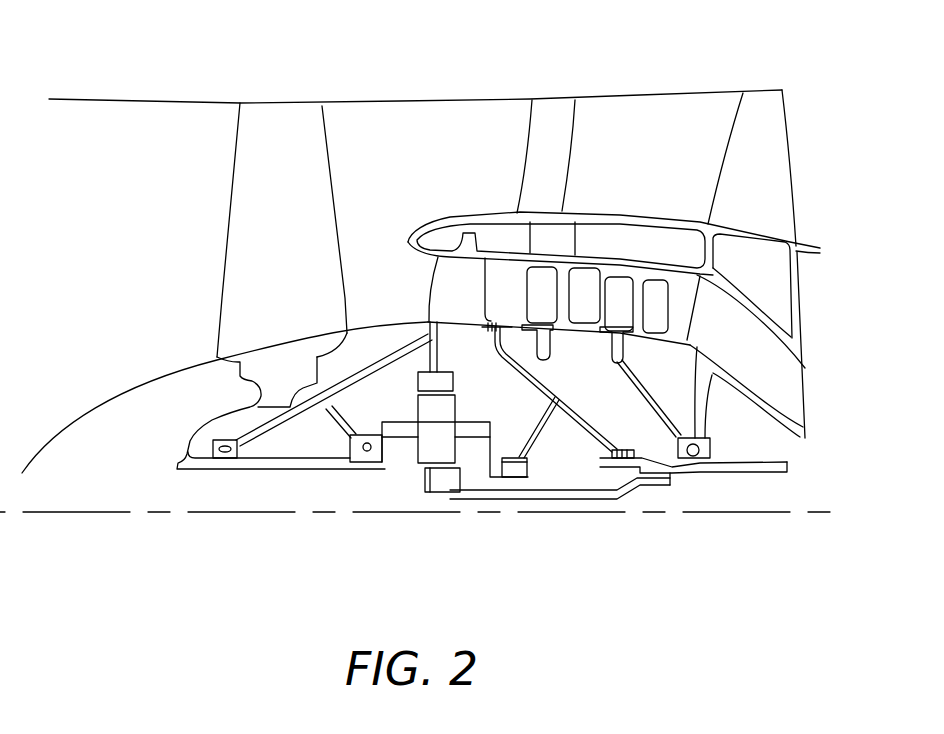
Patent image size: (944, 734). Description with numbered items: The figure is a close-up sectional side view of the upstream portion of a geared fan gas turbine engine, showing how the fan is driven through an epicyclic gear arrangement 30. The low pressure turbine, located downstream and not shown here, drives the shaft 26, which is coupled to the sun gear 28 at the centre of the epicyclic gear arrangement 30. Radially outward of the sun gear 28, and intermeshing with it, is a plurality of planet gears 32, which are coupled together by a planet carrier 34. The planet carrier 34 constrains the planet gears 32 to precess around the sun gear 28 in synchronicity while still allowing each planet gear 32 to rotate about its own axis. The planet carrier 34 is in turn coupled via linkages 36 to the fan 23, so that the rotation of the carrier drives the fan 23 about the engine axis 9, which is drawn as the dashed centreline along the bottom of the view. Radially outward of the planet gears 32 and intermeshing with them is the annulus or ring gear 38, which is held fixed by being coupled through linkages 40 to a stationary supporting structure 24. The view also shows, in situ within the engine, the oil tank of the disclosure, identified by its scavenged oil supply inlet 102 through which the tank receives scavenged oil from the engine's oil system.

The engine axis 9 is at (115, 513).
The fan 23 is at (242, 213).
The stationary supporting structure 24 is at (440, 288).
The shaft 26 is at (560, 493).
The sun gear 28 is at (438, 478).
The epicyclic gear arrangement 30 is at (410, 465).
The planet gears 32 is at (418, 467).
The planet carrier 34 is at (488, 457).
The linkages 36 is at (395, 460).
The ring gear 38 is at (347, 393).
The linkages 40 is at (435, 381).
The scavenged oil supply inlet 102 is at (545, 228).